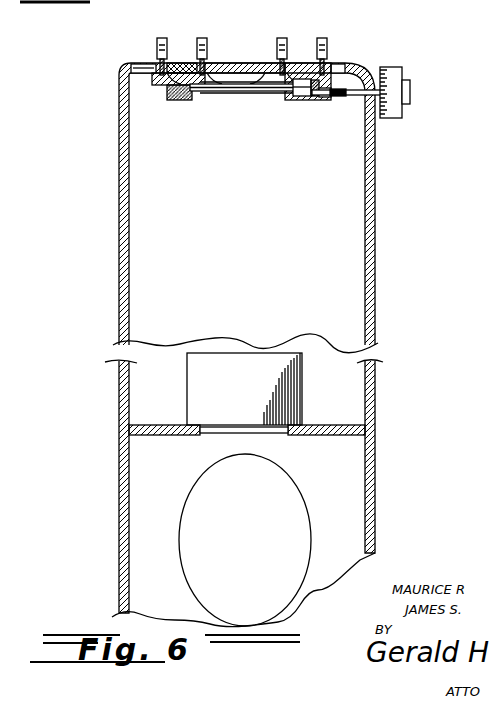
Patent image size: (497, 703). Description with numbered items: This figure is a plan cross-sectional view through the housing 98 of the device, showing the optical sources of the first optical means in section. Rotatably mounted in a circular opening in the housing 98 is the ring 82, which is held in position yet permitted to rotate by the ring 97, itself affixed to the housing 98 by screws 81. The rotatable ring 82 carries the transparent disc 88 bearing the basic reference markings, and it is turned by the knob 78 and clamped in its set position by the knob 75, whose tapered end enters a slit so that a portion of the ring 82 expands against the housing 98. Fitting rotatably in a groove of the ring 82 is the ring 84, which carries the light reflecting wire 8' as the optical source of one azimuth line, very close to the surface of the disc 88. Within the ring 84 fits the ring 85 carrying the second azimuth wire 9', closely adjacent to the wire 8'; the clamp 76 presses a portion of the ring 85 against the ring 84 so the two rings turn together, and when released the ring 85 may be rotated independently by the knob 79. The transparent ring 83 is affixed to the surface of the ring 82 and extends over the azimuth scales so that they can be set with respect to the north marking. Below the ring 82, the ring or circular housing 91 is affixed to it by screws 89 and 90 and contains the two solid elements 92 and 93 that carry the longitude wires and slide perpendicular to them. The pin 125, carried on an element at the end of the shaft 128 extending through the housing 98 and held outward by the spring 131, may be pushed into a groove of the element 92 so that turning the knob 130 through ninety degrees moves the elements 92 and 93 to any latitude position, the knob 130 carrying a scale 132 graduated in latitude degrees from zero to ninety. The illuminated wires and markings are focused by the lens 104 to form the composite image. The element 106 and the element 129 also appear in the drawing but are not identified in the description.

The knob 75 is at (160, 38).
The clamp 76 is at (203, 38).
The knob 78 is at (322, 38).
The knob 79 is at (282, 38).
The screws 81 is at (132, 66).
The ring 82 is at (160, 83).
The transparent ring 83 is at (192, 62).
The ring 84 is at (181, 68).
The ring 85 is at (213, 70).
The transparent disc 88 is at (260, 129).
The screws 89 is at (165, 97).
The screws 90 is at (322, 100).
The ring 91 is at (162, 90).
The solid element 92 is at (186, 102).
The solid element 93 is at (282, 93).
The ring 97 is at (140, 64).
The housing 98 is at (126, 67).
The lens 104 is at (303, 392).
The gyro element 106 is at (311, 520).
The pin 125 is at (323, 95).
The shaft 128 is at (371, 113).
The dial mount 129 is at (398, 117).
The knob 130 is at (410, 90).
The spring 131 is at (387, 66).
The scale 132 is at (408, 80).
The light reflecting wire 8' is at (265, 111).
The wire 9' is at (264, 125).